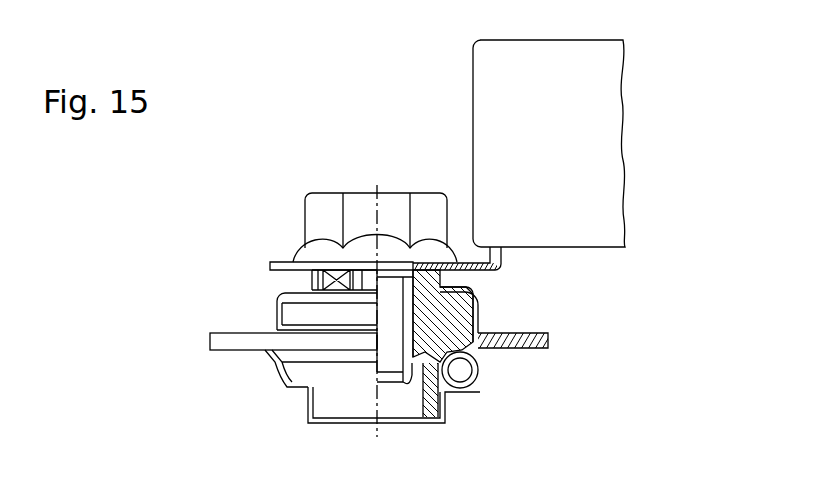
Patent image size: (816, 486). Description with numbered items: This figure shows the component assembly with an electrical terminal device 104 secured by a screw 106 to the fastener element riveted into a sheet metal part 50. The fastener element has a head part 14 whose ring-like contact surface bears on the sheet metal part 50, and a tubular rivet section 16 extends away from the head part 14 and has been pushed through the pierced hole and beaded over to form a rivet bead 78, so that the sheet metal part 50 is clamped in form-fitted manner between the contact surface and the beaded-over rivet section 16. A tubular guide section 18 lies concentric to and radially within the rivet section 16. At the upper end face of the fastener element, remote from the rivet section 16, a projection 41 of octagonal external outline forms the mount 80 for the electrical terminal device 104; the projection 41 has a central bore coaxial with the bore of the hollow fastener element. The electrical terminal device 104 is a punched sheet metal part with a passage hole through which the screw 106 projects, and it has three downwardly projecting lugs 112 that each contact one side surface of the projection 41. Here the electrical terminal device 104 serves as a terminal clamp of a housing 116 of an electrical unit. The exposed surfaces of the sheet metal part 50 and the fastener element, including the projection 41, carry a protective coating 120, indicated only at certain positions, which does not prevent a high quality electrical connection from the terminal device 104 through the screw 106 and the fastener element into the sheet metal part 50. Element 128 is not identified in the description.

The head part 14 is at (478, 317).
The tubular rivet section 16 is at (474, 376).
The tubular guide section 18 is at (442, 415).
The projection 41 is at (440, 273).
The sheet metal part 50 is at (228, 352).
The rivet bead 78 is at (288, 388).
The mount 80 is at (282, 288).
The electrical terminal device 104 is at (273, 266).
The screw 106 is at (320, 200).
The lugs 112 is at (308, 283).
The housing 116 is at (602, 103).
The protective coating 120 is at (282, 329).
The elastomer block 128 is at (476, 292).